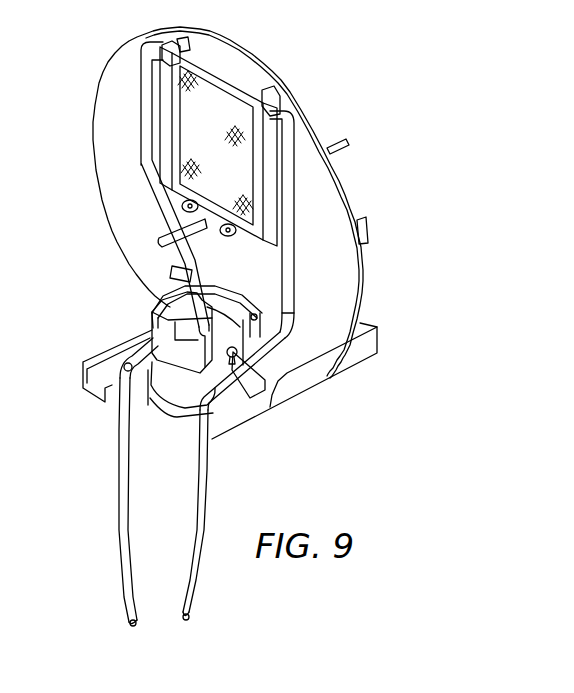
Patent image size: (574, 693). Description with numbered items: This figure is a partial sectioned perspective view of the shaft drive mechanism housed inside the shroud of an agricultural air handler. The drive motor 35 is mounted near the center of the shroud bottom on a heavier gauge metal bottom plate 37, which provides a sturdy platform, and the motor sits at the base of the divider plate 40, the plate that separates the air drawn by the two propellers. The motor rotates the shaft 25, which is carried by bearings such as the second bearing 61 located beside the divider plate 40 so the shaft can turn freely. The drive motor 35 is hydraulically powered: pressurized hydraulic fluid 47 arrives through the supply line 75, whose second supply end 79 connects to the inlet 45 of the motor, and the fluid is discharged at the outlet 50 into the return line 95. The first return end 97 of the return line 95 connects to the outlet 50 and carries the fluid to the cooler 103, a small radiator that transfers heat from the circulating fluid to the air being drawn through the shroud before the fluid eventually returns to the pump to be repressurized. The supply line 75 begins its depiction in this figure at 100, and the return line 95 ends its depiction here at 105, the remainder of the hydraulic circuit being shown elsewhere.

The shaft 25 is at (160, 242).
The drive motor 35 is at (178, 403).
The bottom plate 37 is at (95, 362).
The divider plate 40 is at (315, 357).
The inlet 45 is at (148, 380).
The hydraulic fluid 47 is at (183, 620).
The outlet 50 is at (243, 363).
The second bearing 61 is at (212, 225).
The supply line 75 is at (120, 453).
The second supply end 79 is at (143, 347).
The return line 95 is at (207, 473).
The first return end 97 is at (242, 337).
The supply line continuation point 100 is at (127, 602).
The cooler 103 is at (193, 80).
The return line continuation point 105 is at (190, 602).